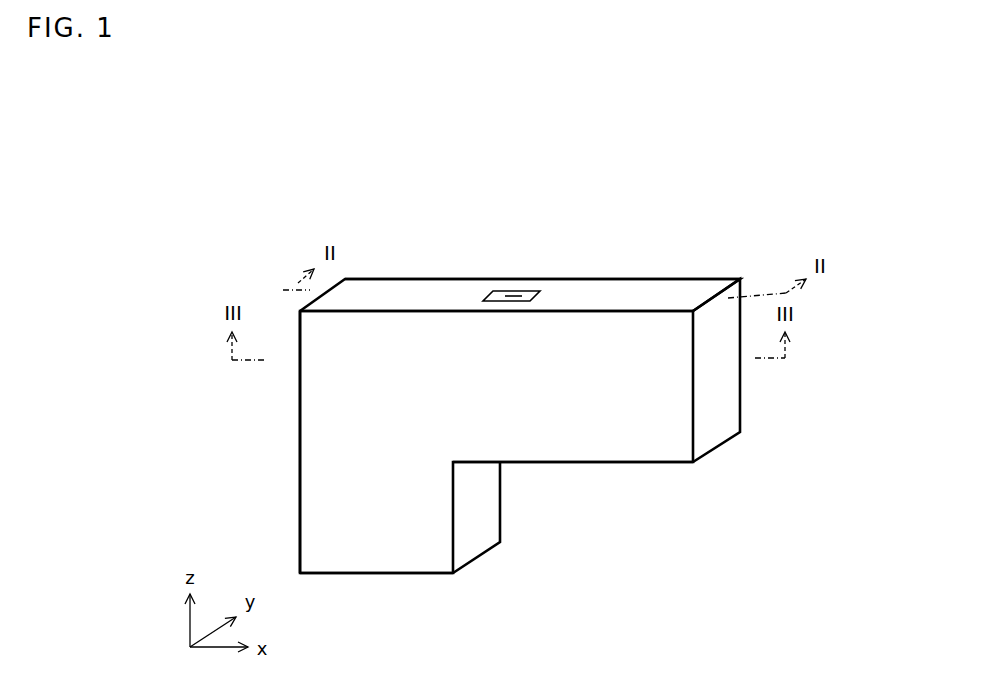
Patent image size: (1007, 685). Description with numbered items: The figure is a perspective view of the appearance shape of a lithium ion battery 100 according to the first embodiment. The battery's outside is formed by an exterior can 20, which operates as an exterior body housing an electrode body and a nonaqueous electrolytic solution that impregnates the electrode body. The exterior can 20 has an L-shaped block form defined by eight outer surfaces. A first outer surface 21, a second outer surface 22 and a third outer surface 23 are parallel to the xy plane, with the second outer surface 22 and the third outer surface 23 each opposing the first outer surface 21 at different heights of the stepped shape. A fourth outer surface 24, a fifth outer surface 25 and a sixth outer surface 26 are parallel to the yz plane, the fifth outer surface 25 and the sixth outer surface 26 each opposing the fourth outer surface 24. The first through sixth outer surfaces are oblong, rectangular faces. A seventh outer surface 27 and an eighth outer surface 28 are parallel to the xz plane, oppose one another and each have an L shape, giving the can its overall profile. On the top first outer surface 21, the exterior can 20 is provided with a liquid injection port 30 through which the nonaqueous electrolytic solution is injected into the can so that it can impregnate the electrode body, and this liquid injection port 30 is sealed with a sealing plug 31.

The lithium ion battery 100 is at (506, 373).
The exterior can 20 is at (378, 287).
The first outer surface 21 is at (421, 296).
The second outer surface 22 is at (409, 555).
The third outer surface 23 is at (656, 442).
The fourth outer surface 24 is at (348, 421).
The fifth outer surface 25 is at (484, 511).
The sixth outer surface 26 is at (707, 377).
The seventh outer surface 27 is at (343, 469).
The eighth outer surface 28 is at (635, 301).
The liquid injection port 30 is at (529, 288).
The sealing plug 31 is at (515, 296).